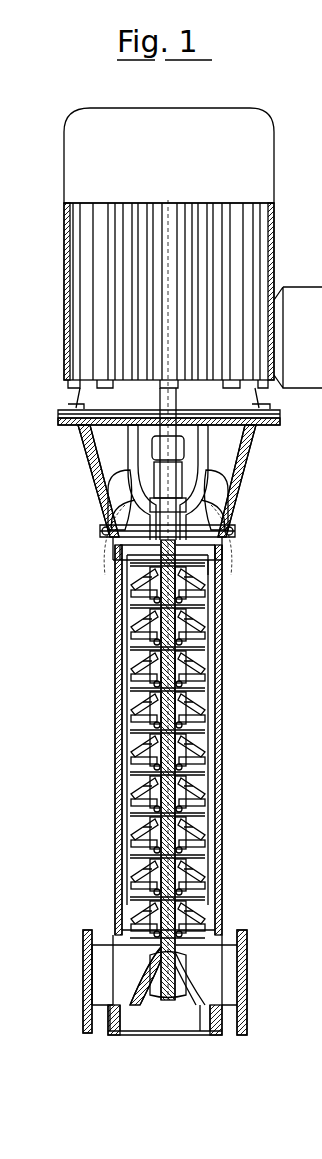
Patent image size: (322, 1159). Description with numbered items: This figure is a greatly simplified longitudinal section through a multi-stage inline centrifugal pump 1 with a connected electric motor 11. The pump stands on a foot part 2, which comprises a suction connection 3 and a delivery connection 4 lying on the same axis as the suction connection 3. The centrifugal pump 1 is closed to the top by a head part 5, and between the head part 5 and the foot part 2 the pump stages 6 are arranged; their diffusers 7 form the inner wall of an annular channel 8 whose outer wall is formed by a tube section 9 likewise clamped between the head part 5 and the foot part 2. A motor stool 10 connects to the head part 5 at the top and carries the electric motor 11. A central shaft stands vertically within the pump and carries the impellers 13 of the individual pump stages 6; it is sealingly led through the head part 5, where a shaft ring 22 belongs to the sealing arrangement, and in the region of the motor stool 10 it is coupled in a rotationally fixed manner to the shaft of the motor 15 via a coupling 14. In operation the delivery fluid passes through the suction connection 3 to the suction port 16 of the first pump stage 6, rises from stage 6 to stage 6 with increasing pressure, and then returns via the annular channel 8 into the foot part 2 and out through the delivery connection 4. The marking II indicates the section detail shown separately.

The centrifugal pump 1 is at (96, 762).
The foot part 2 is at (197, 1033).
The suction connection 3 is at (247, 1023).
The delivery connection 4 is at (86, 942).
The head part 5 is at (113, 548).
The pump stages 6 is at (206, 678).
The diffuser 7 is at (206, 797).
The annular channel 8 is at (212, 873).
The tube section 9 is at (216, 838).
The motor stool 10 is at (238, 486).
The electric motor 11 is at (182, 169).
The impeller 13 is at (207, 922).
The coupling 14 is at (152, 465).
The shaft of the motor 15 is at (174, 432).
The suction port of the first pump stage 16 is at (173, 946).
The shaft ring 22 is at (183, 540).
The section line II is at (222, 580).